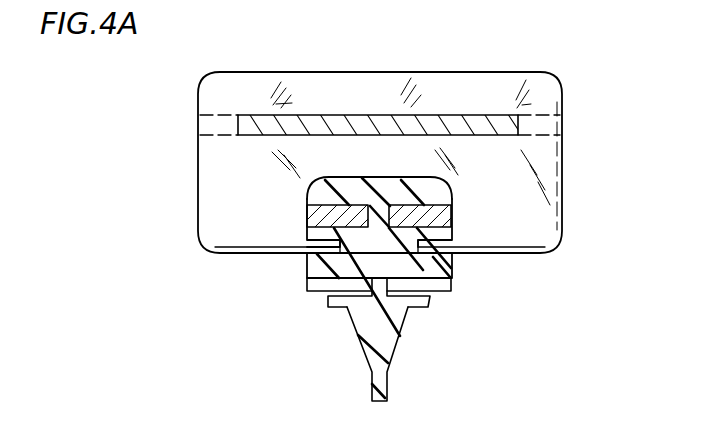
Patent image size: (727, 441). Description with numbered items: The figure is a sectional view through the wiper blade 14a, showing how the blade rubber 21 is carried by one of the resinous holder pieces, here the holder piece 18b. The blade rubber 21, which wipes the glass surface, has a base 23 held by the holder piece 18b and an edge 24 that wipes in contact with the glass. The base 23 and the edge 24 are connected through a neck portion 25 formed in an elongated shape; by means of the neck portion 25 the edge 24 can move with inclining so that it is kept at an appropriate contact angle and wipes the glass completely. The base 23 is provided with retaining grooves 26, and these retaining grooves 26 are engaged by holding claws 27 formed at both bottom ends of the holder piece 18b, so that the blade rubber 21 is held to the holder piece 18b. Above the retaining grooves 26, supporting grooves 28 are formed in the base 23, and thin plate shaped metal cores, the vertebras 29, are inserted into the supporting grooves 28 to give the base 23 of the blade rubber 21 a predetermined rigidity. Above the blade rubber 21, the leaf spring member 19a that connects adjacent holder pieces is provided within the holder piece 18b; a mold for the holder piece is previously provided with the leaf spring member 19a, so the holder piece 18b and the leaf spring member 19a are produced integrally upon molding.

The wiper blade 14a is at (586, 71).
The holder piece 18b is at (548, 148).
The leaf spring member 19a is at (464, 122).
The blade rubber 21 is at (324, 305).
The base 23 is at (310, 280).
The edge 24 is at (380, 340).
The neck portion 25 is at (412, 287).
The retaining groove 26 is at (218, 248).
The holding claw 27 is at (307, 267).
The supporting groove 28 is at (326, 178).
The vertebra 29 is at (342, 210).